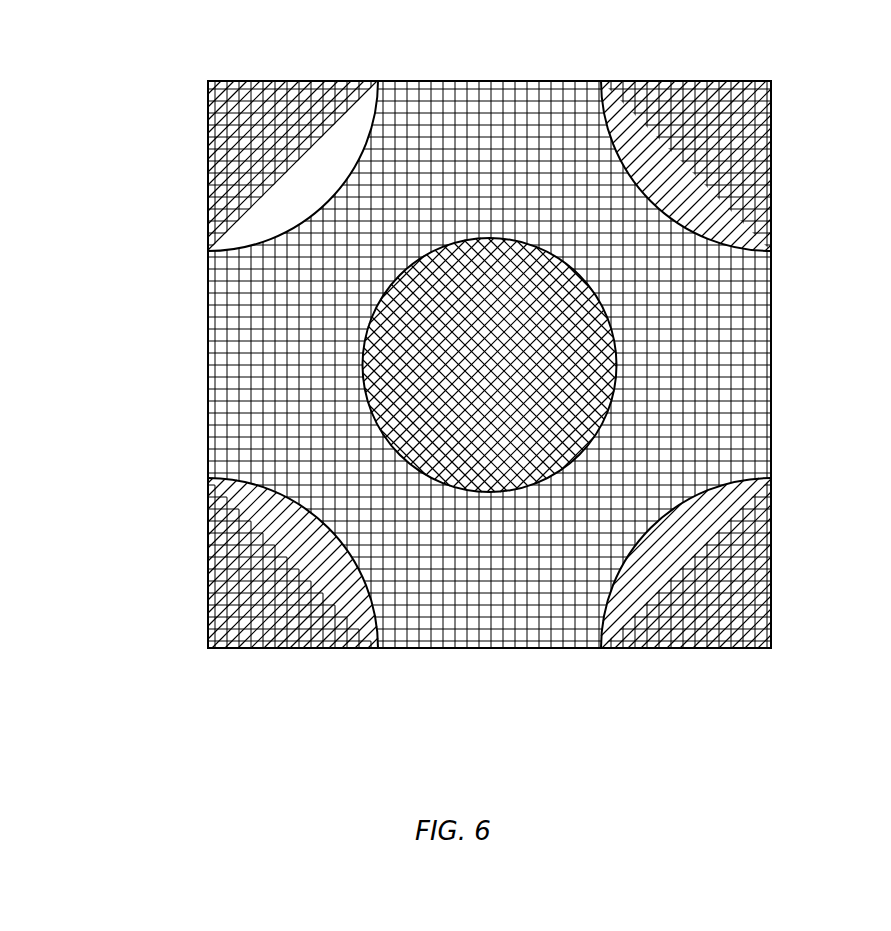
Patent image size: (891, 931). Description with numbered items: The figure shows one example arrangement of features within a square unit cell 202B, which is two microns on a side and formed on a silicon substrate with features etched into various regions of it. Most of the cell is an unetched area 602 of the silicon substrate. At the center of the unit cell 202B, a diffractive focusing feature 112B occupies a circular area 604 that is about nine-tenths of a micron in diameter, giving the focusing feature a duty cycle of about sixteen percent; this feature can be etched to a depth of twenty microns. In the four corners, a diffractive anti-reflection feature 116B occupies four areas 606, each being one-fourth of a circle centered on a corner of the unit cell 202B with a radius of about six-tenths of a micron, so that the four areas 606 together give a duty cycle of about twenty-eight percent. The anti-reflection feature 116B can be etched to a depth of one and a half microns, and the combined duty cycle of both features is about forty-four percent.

The unit cell 202B is at (146, 106).
The diffractive anti-reflection feature 116B is at (207, 163).
The diffractive focusing feature 112B is at (362, 366).
The unetched area 602 is at (472, 179).
The circular area 604 is at (508, 377).
The corner areas 606 is at (268, 151).